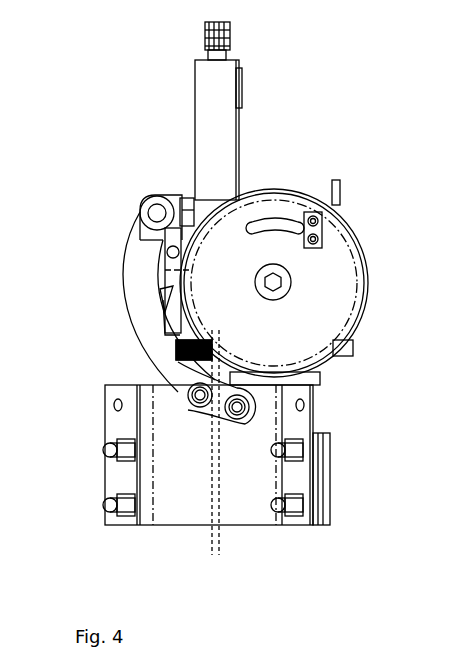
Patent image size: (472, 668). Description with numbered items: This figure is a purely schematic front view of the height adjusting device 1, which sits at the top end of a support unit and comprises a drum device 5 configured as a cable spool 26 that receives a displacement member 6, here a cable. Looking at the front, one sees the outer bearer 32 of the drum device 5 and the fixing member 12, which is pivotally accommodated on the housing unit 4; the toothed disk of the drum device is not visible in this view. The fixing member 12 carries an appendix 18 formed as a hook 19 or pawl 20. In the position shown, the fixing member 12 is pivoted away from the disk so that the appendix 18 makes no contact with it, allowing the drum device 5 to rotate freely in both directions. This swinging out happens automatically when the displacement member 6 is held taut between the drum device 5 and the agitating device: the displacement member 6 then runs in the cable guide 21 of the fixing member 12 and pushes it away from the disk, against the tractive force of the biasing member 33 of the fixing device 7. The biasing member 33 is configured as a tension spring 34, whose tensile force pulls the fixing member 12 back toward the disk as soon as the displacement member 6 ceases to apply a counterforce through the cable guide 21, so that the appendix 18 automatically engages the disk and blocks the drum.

The height adjusting device 1 is at (101, 58).
The fixing device 7 is at (166, 178).
The fixing member 12 is at (130, 240).
The appendix 18 is at (160, 290).
The hook 19 is at (158, 300).
The pawl 20 is at (160, 308).
The biasing member 33 is at (207, 340).
The spring 34 is at (200, 345).
The drum device 5 is at (325, 302).
The cable spool 26 is at (335, 268).
The outer bearer 32 is at (283, 212).
The housing unit 4 is at (148, 381).
The displacement member 6 is at (213, 455).
The cable guide 21 is at (218, 410).